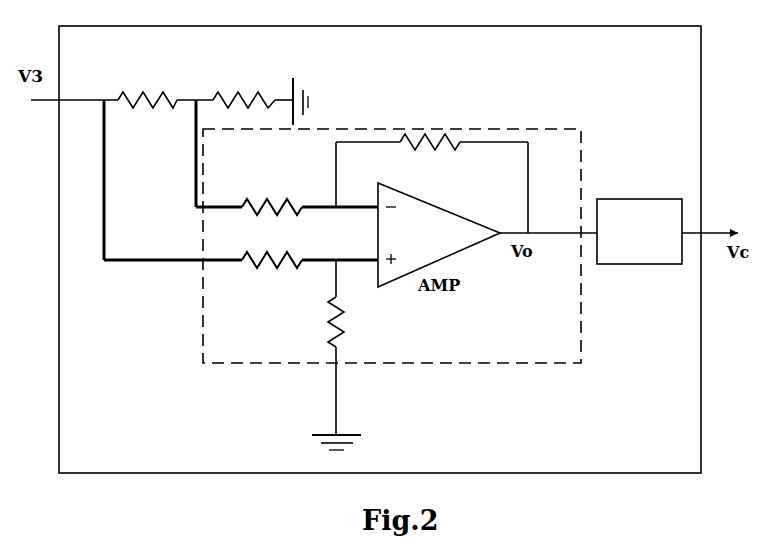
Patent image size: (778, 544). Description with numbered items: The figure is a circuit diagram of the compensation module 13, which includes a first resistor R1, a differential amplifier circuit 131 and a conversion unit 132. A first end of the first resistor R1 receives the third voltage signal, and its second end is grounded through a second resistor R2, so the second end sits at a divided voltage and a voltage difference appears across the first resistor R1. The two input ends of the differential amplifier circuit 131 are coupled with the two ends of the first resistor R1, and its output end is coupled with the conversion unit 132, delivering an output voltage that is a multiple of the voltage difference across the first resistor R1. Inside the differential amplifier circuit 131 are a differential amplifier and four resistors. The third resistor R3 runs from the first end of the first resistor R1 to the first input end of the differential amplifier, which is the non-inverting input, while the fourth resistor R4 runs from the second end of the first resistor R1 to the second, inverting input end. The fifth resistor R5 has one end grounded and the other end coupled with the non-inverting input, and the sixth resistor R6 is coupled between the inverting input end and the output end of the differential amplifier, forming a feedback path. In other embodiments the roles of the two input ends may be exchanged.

The compensation module 13 is at (701, 423).
The differential amplifier circuit 131 is at (548, 363).
The conversion unit 132 is at (639, 231).
The first resistor R1 is at (147, 87).
The second resistor R2 is at (244, 87).
The third resistor R3 is at (272, 277).
The fourth resistor R4 is at (272, 195).
The fifth resistor R5 is at (313, 347).
The sixth resistor R6 is at (432, 170).